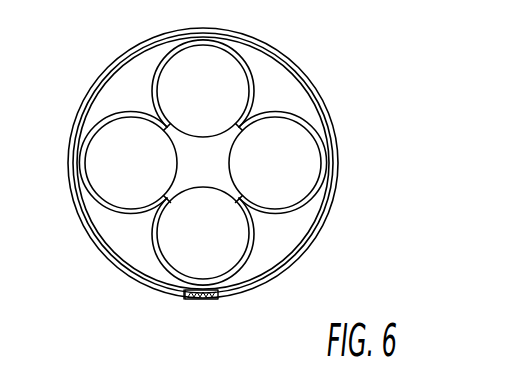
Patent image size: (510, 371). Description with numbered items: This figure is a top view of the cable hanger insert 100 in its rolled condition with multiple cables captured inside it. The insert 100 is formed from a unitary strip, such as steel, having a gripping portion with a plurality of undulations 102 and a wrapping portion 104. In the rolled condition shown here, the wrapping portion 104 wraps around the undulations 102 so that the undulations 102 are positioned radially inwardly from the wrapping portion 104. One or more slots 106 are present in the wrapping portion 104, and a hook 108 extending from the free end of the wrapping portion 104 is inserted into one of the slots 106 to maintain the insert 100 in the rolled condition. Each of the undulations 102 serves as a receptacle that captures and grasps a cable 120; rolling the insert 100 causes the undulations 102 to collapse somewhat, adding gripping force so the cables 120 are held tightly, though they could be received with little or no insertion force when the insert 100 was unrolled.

The cable hanger insert 100 is at (259, 184).
The undulations 102 is at (180, 262).
The wrapping portion 104 is at (293, 238).
The slots 106 is at (213, 298).
The hook 108 is at (185, 297).
The cable 120 is at (107, 148).